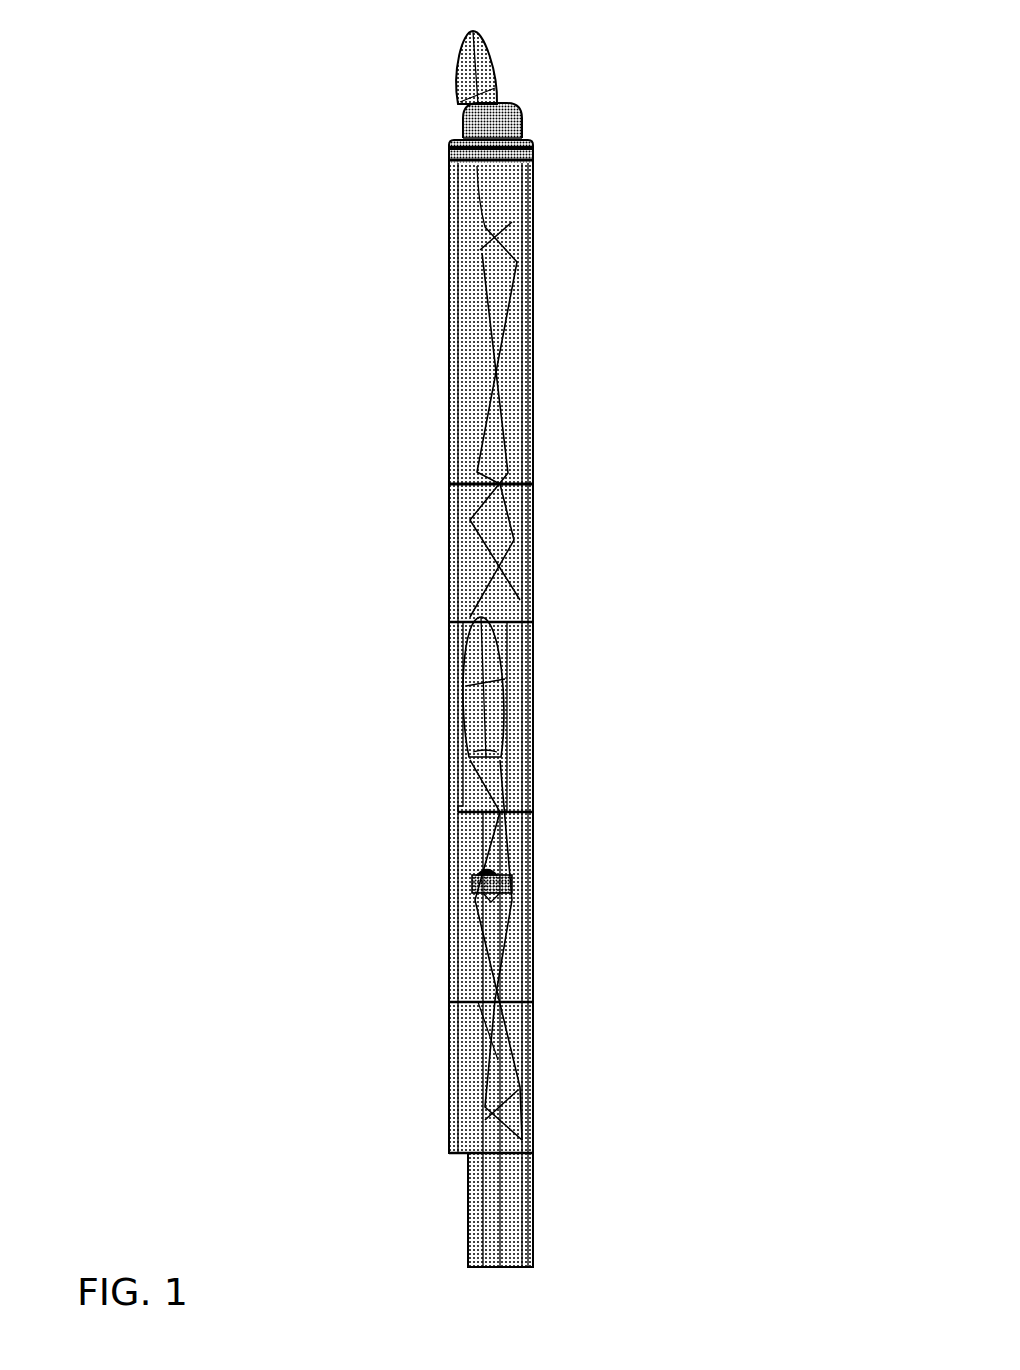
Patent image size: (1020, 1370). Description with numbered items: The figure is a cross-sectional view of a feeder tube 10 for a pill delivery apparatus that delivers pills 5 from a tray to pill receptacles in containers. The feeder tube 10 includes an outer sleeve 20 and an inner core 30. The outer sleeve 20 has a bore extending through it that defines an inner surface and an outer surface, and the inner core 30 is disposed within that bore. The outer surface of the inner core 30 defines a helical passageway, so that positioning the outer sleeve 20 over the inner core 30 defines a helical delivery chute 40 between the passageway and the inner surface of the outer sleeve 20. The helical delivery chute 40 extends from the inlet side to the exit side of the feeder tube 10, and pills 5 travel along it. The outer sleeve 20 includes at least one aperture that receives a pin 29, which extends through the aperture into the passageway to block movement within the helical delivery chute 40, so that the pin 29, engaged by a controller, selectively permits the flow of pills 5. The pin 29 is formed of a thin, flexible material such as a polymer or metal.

The feeder tube 10 is at (262, 128).
The outer sleeve 20 is at (441, 375).
The pill 5 is at (483, 82).
The inner core 30 is at (482, 208).
The helical delivery chute 40 is at (511, 346).
The pin 29 is at (504, 877).